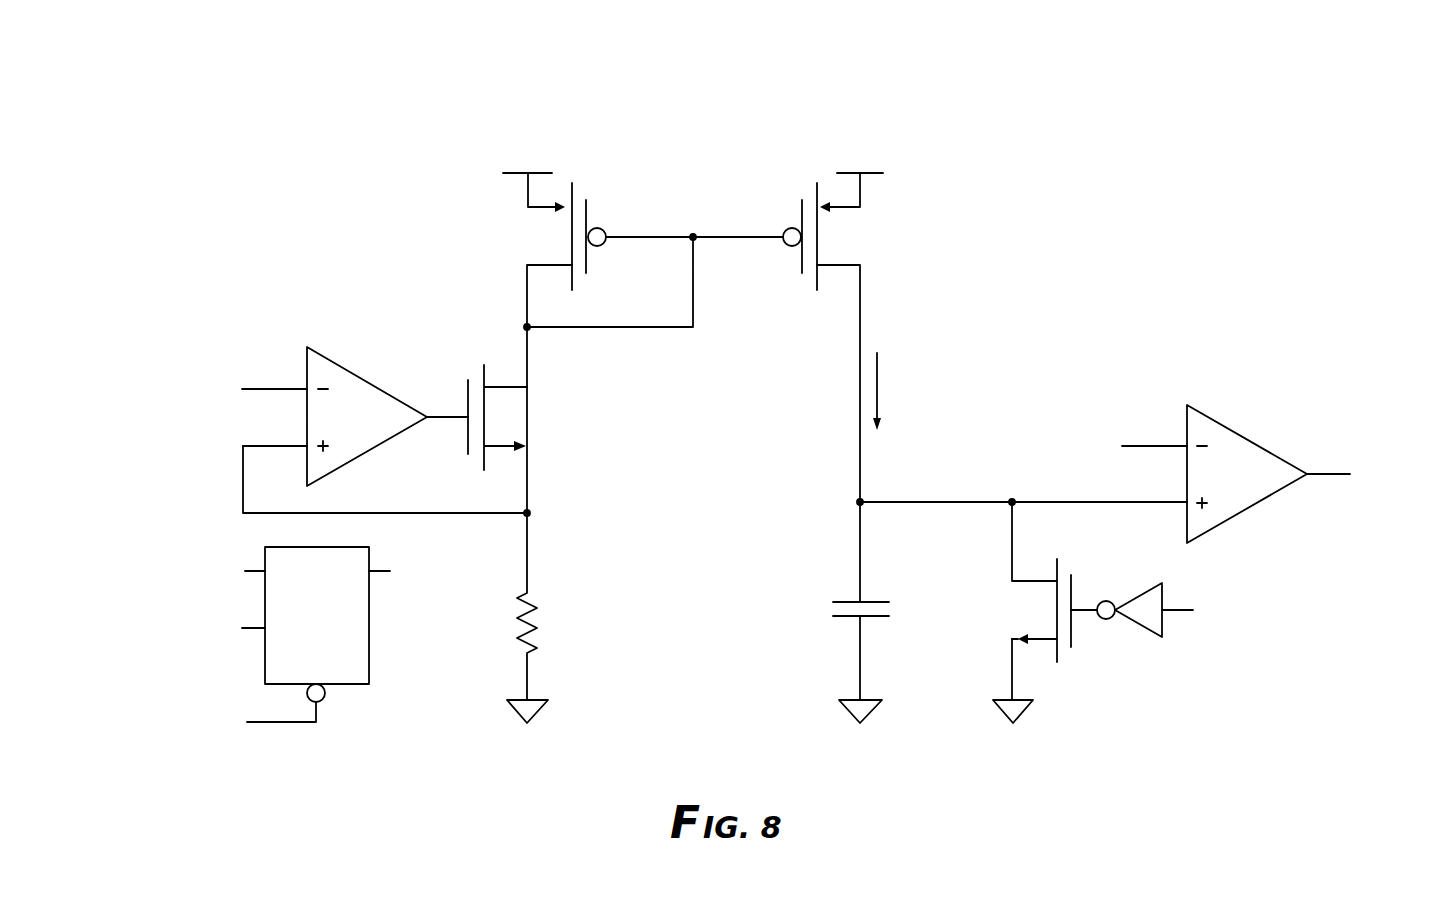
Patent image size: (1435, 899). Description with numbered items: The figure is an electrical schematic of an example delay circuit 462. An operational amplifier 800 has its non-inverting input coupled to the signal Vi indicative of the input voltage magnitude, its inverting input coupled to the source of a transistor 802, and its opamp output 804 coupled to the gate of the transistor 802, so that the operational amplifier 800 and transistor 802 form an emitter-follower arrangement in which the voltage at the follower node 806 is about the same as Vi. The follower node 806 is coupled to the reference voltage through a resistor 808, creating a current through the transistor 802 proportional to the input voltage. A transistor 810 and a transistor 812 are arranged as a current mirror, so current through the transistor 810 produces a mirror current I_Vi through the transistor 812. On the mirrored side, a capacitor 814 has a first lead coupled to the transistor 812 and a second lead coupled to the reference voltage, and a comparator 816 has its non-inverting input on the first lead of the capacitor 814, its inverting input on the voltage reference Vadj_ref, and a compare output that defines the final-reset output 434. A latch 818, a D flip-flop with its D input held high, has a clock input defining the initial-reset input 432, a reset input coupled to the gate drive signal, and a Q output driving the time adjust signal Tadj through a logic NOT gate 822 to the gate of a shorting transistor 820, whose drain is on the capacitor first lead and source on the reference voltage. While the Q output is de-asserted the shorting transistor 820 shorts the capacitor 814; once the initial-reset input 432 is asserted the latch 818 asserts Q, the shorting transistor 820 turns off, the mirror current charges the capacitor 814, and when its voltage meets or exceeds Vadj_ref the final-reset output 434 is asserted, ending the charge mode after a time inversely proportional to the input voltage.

The delay circuit 462 is at (138, 154).
The operational amplifier 800 is at (345, 368).
The transistor 802 is at (534, 417).
The opamp output 804 is at (448, 410).
The follower node 806 is at (535, 513).
The resistor 808 is at (547, 624).
The transistor 810 is at (605, 213).
The transistor 812 is at (786, 210).
The capacitor 814 is at (821, 625).
The comparator 816 is at (1236, 430).
The latch 818 is at (350, 617).
The shorting transistor 820 is at (1008, 606).
The logic NOT gate 822 is at (1162, 627).
The initial-reset input 432 is at (255, 630).
The final-reset output 434 is at (1330, 474).